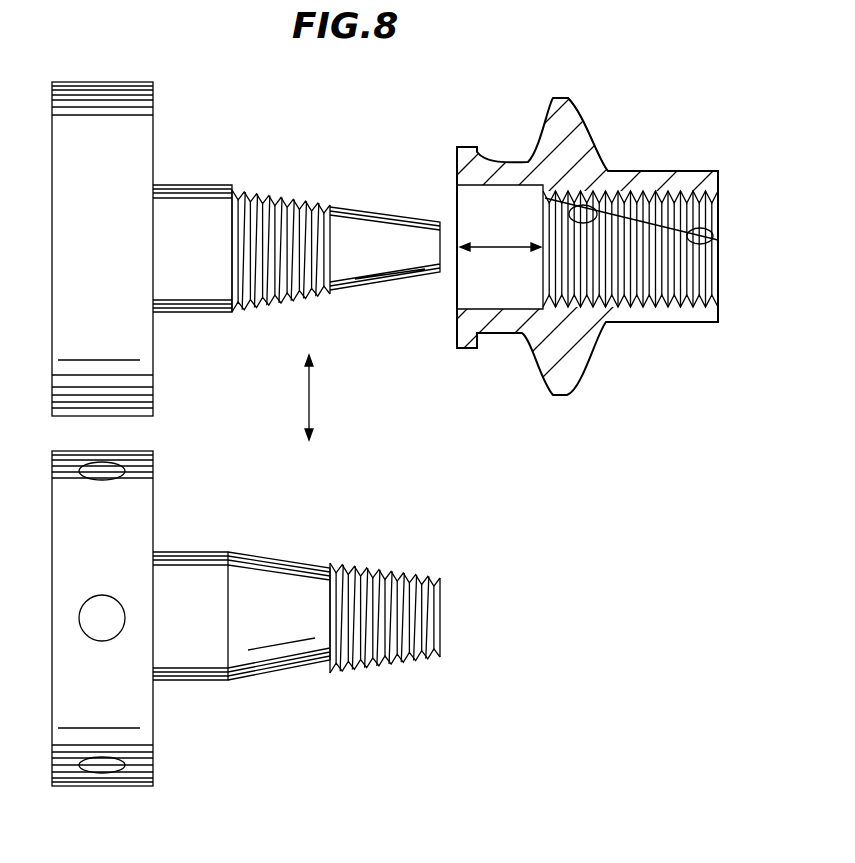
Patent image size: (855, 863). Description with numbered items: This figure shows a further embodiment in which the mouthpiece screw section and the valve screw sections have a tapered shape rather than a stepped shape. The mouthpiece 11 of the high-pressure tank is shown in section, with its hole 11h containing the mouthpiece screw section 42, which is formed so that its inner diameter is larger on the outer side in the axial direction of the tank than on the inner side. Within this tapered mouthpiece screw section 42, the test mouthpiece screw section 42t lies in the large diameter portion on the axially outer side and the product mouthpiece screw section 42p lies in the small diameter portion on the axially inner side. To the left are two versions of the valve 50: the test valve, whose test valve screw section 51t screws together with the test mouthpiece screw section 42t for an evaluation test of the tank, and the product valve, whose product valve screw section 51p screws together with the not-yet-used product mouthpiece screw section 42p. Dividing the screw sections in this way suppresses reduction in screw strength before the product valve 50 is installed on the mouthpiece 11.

The valve 50 is at (143, 122).
The test valve screw section 51t is at (322, 192).
The product valve screw section 51p is at (447, 560).
The mouthpiece screw section 42 is at (495, 241).
The test mouthpiece screw section 42t is at (578, 212).
The product mouthpiece screw section 42p is at (713, 236).
The hole 11h is at (512, 275).
The mouthpiece 11 is at (558, 120).